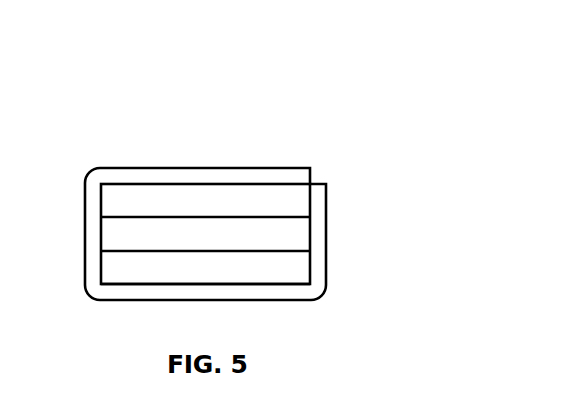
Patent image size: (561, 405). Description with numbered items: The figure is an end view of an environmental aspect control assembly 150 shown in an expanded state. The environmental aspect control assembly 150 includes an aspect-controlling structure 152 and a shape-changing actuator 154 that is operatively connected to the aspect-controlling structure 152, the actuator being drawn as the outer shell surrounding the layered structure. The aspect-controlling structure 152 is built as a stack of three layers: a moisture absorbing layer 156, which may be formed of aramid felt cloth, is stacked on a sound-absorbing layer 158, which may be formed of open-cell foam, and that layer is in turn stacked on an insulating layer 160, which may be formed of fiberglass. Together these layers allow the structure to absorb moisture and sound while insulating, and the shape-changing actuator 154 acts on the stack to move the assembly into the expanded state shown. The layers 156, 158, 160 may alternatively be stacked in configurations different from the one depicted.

The environmental aspect control assembly 150 is at (215, 216).
The aspect-controlling structure 152 is at (159, 221).
The shape-changing actuator 154 is at (334, 234).
The moisture absorbing layer 156 is at (150, 198).
The sound-absorbing layer 158 is at (124, 232).
The insulating layer 160 is at (118, 275).